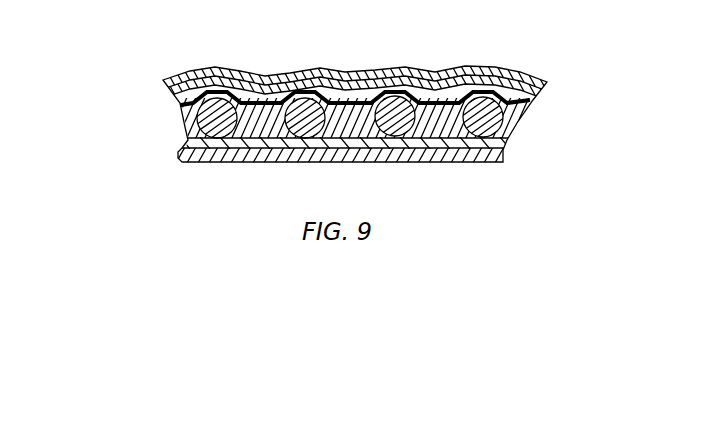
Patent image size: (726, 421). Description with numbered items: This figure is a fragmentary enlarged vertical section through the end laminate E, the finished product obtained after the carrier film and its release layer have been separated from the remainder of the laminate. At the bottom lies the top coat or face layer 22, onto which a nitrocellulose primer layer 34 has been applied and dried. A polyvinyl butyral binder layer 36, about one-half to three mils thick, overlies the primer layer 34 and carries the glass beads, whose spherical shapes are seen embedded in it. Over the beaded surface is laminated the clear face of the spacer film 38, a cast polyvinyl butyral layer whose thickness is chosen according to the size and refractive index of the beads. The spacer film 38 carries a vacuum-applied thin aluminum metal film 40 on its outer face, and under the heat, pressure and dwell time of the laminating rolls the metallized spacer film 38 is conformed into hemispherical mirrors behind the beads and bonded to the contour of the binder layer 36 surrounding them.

The end laminate E is at (165, 124).
The top coat or face layer 22 is at (178, 163).
The primer layer 34 is at (190, 141).
The binder layer 36 is at (503, 144).
The spacer film 38 is at (388, 72).
The metal film 40 is at (517, 72).